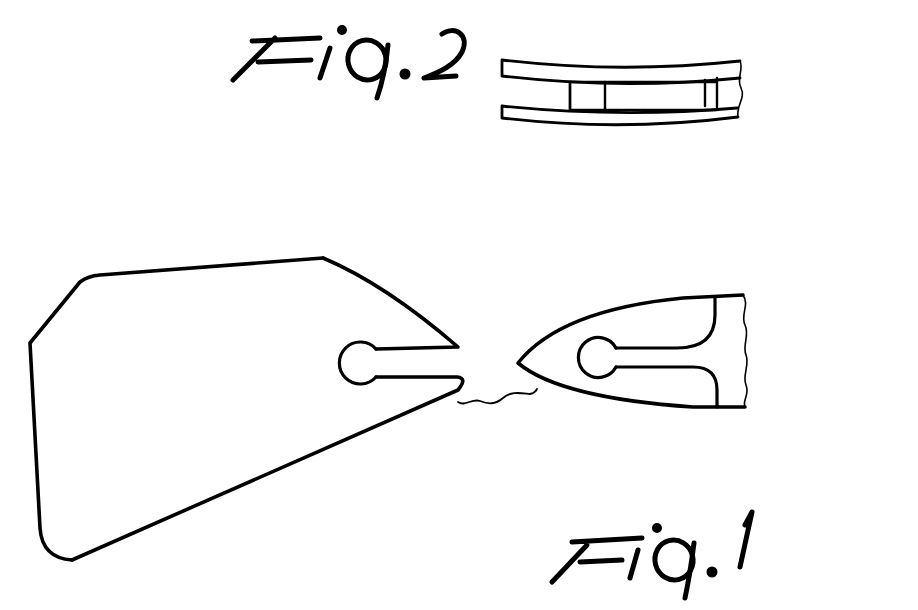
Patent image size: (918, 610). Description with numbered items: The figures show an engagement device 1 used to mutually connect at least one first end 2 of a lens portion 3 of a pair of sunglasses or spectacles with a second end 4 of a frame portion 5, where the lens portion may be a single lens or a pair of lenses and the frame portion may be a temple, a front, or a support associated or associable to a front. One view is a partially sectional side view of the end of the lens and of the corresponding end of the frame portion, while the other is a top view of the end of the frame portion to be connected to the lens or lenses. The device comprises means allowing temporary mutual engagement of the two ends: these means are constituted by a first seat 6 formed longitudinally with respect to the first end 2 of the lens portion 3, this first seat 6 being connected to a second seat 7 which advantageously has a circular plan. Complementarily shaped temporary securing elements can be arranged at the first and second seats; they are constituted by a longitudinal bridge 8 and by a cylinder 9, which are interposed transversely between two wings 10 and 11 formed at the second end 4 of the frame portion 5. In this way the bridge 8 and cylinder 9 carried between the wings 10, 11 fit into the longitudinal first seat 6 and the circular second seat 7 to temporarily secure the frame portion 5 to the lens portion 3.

In FIG. 1, the engagement device 1 is at (246, 337).
In FIG. 1, the first end 2 is at (390, 436).
In FIG. 1, the lens portion 3 is at (160, 295).
In FIG. 1, the second end 4 is at (661, 356).
In FIG. 1, the frame portion 5 is at (735, 340).
In FIG. 2, the frame portion 5 is at (740, 78).
In FIG. 1, the first seat 6 is at (419, 360).
In FIG. 1, the second seat 7 is at (358, 373).
In FIG. 1, the longitudinal bridge 8 is at (678, 357).
In FIG. 2, the longitudinal bridge 8 is at (668, 90).
In FIG. 1, the cylinder 9 is at (597, 366).
In FIG. 2, the cylinder 9 is at (593, 97).
In FIG. 2, the wing 10 is at (542, 125).
In FIG. 1, the wing 11 is at (670, 312).
In FIG. 2, the wing 11 is at (542, 62).